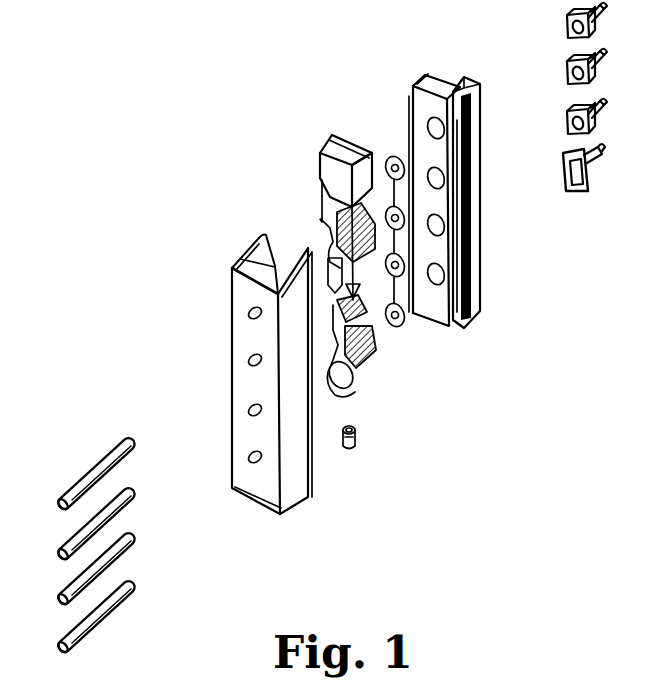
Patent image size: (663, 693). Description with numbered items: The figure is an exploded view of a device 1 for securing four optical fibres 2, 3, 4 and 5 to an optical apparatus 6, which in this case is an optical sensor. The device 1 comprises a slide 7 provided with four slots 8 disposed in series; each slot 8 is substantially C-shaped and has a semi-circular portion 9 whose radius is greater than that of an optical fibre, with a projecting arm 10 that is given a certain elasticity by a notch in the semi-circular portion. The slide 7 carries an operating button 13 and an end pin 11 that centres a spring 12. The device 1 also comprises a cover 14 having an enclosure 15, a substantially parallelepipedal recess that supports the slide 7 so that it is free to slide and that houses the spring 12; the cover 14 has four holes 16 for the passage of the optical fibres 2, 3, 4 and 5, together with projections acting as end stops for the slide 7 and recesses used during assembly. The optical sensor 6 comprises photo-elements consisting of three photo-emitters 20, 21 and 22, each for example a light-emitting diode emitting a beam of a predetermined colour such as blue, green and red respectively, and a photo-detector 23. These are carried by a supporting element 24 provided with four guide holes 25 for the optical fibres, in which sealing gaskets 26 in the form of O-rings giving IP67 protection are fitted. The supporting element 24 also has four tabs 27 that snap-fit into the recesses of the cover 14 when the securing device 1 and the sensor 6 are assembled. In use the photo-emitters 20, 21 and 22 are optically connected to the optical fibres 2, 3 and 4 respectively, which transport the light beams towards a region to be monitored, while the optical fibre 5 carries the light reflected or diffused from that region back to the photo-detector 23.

The device 1 is at (259, 192).
The optical fibre 2 is at (124, 455).
The optical fibre 3 is at (124, 505).
The optical fibre 4 is at (124, 550).
The optical fibre 5 is at (124, 598).
The optical apparatus 6 is at (482, 37).
The slide 7 is at (320, 171).
The slot 8 is at (335, 213).
The semi-circular portion 9 is at (358, 384).
The projecting arm 10 is at (331, 413).
The end pin 11 is at (340, 403).
The spring 12 is at (357, 441).
The operating button 13 is at (328, 138).
The cover 14 is at (220, 269).
The enclosure 15 is at (262, 236).
The holes 16 is at (248, 313).
The photo-emitter 20 is at (567, 23).
The photo-emitter 21 is at (567, 69).
The photo-emitter 22 is at (567, 118).
The photo-detector 23 is at (563, 165).
The supporting element 24 is at (403, 77).
The guide holes 25 is at (428, 121).
The sealing gaskets 26 is at (390, 206).
The tabs 27 is at (463, 180).